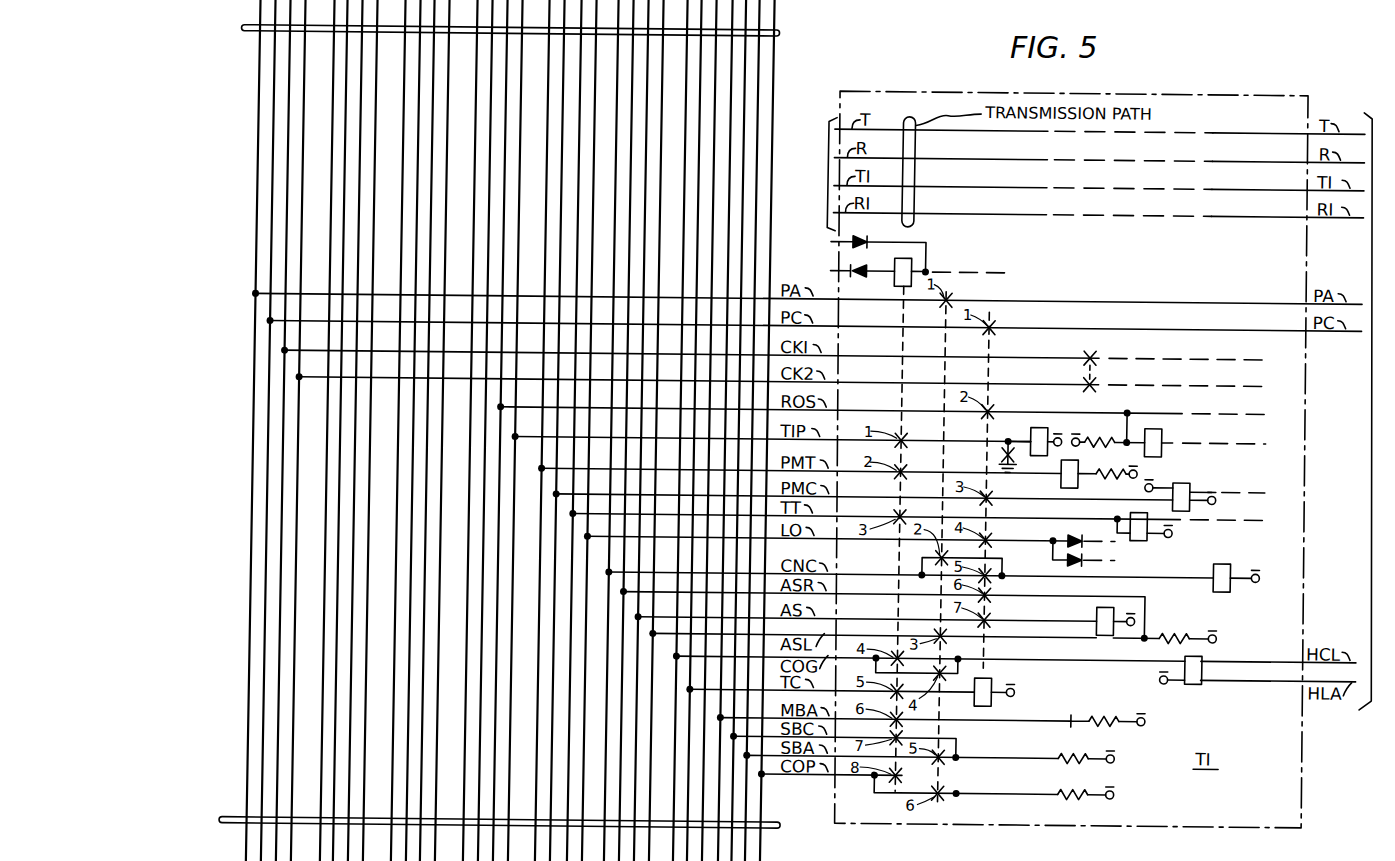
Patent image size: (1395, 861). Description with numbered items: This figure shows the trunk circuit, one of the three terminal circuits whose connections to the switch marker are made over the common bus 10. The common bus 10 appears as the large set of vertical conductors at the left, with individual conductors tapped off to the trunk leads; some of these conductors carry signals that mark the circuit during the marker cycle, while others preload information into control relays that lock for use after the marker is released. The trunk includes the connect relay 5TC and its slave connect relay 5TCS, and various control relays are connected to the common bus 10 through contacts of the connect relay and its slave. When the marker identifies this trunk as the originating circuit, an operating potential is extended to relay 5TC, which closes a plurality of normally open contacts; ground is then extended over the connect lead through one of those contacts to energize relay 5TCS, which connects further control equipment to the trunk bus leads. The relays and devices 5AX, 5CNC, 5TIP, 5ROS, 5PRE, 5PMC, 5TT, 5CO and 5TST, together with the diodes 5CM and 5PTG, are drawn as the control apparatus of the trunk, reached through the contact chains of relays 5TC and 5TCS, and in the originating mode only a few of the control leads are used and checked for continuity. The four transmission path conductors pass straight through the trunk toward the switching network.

The common bus 10 is at (240, 31).
The diode 5CM is at (846, 241).
The diode 5PTG is at (846, 270).
The connect relay 5TC is at (897, 284).
The relay 5AX is at (945, 353).
The relay 5CNC is at (1095, 383).
The relay 5TIP is at (1047, 429).
The relay 5ROS is at (1161, 434).
The relay 5PRE is at (1066, 484).
The relay 5PMC is at (1180, 480).
The relay 5TT is at (1142, 537).
The relay 5CO is at (1199, 681).
The slave connect relay 5TCS is at (996, 684).
The relay 5TST is at (1074, 699).